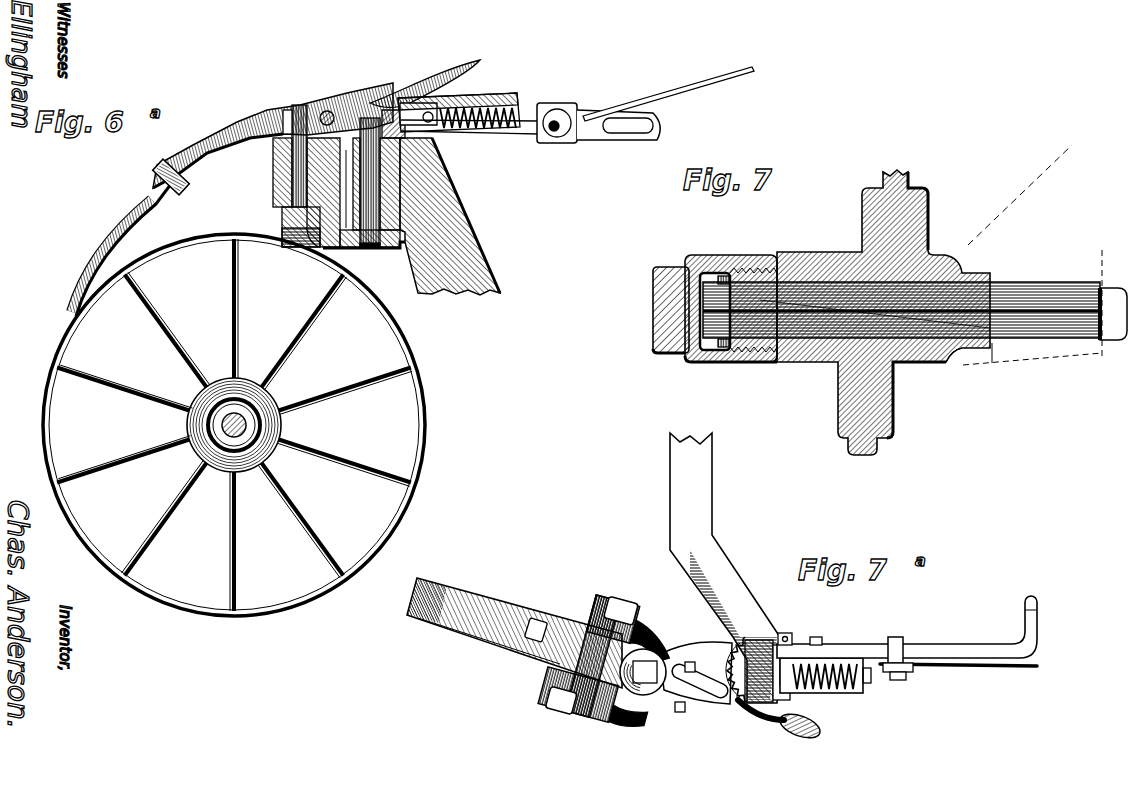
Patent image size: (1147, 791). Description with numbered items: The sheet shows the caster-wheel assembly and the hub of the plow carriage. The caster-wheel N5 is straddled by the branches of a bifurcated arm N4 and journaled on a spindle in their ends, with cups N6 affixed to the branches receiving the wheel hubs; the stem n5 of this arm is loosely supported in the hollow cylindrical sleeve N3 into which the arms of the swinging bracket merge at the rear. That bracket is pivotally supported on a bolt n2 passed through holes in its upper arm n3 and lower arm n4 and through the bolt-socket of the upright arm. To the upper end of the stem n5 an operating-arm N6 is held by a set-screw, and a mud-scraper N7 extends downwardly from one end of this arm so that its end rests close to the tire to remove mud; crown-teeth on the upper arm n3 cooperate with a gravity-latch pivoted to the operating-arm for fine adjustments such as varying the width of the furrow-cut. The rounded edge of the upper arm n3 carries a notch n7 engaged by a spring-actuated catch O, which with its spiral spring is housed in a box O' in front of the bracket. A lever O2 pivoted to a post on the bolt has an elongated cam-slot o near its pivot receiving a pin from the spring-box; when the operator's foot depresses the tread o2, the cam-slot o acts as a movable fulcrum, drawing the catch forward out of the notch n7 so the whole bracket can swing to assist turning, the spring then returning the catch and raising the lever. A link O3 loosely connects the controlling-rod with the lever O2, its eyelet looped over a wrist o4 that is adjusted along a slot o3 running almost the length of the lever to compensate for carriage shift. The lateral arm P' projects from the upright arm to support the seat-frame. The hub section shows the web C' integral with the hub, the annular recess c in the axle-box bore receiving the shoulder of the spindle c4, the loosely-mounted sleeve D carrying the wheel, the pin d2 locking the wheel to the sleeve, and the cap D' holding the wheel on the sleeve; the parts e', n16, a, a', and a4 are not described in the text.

In FIG. 6A, the caster-wheel N5 is at (234, 425).
In FIG. 7A, the caster-wheel N5 is at (514, 623).
In FIG. 6A, the mud-scraper N7 is at (124, 246).
In FIG. 7A, the mud-scraper N7 is at (489, 643).
In FIG. 6A, the operating-arm N6 is at (273, 135).
In FIG. 7A, the operating-arm N6 is at (662, 656).
In FIG. 6A, the stem n5 is at (273, 173).
In FIG. 7A, the stem n5 is at (652, 694).
In FIG. 6A, the hollow cylindrical sleeve N3 is at (273, 157).
In FIG. 6A, the upper arm of the swinging bracket n3 is at (353, 98).
In FIG. 6A, the bifurcated arm N4 is at (293, 252).
In FIG. 7A, the bifurcated arm N4 is at (609, 665).
In FIG. 6A, the lower arm of the swinging bracket n4 is at (356, 202).
In FIG. 6A, the bolt n2 is at (300, 192).
In FIG. 6A, the notch n7 is at (416, 104).
In FIG. 7A, the notch n7 is at (785, 633).
In FIG. 6A, the box O' is at (468, 100).
In FIG. 7A, the box O' is at (826, 690).
In FIG. 6A, the spring-actuated catch O is at (470, 141).
In FIG. 6A, the lever O2 is at (598, 133).
In FIG. 7A, the lever O2 is at (907, 627).
In FIG. 7A, the tread o2 is at (1045, 617).
In FIG. 6A, the link O3 is at (668, 91).
In FIG. 7A, the slot o3 is at (962, 668).
In FIG. 7A, the wrist o4 is at (900, 640).
In FIG. 7A, the cam-slot o is at (752, 712).
In FIG. 7A, the stop block e' is at (817, 630).
In FIG. 7A, the gear sector n16 is at (750, 640).
In FIG. 7A, the arm P' is at (725, 568).
In FIG. 7, the hub body a is at (894, 312).
In FIG. 7, the lower flange a' is at (937, 384).
In FIG. 7, the bore cap a4 is at (723, 285).
In FIG. 7, the annular recess c is at (958, 360).
In FIG. 7, the spindle c4 is at (1040, 328).
In FIG. 7, the web C' is at (901, 311).
In FIG. 7, the pin d2 is at (950, 262).
In FIG. 7, the sleeve D is at (750, 325).
In FIG. 7, the cap D' is at (653, 310).